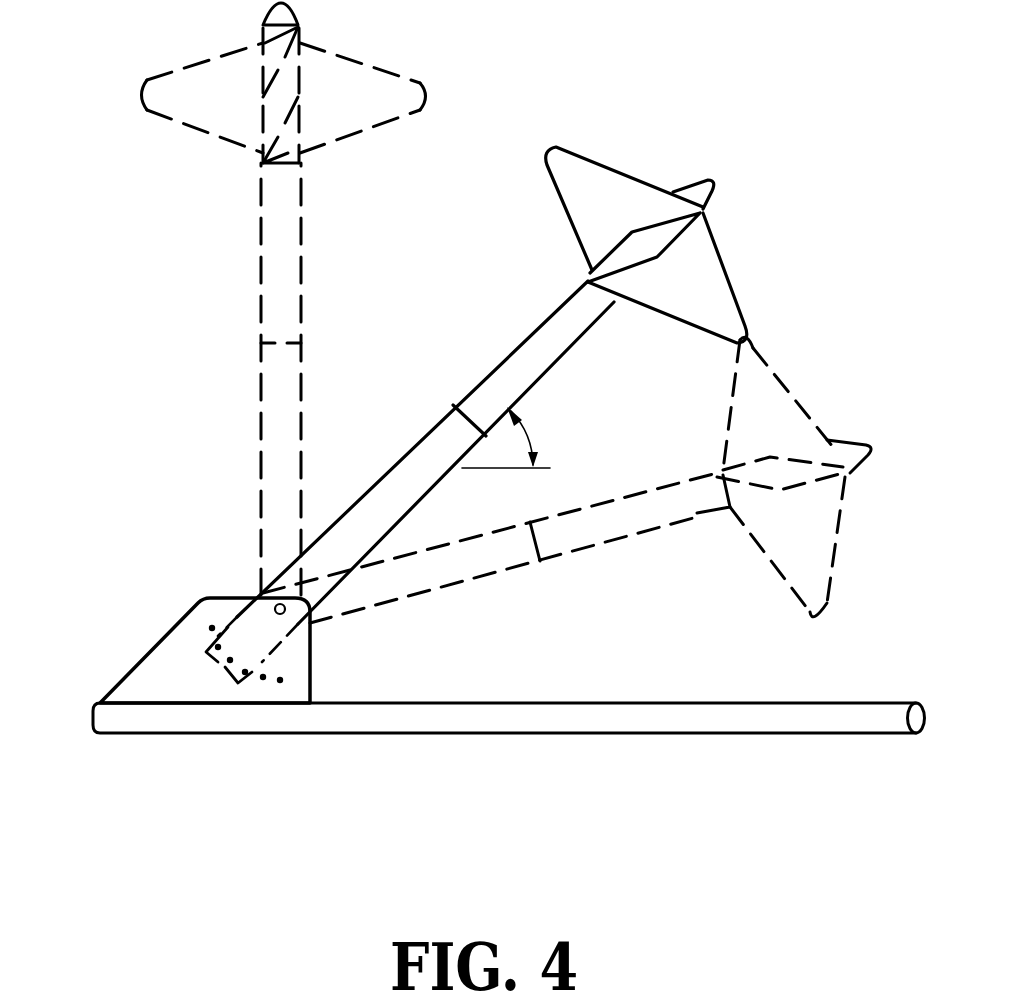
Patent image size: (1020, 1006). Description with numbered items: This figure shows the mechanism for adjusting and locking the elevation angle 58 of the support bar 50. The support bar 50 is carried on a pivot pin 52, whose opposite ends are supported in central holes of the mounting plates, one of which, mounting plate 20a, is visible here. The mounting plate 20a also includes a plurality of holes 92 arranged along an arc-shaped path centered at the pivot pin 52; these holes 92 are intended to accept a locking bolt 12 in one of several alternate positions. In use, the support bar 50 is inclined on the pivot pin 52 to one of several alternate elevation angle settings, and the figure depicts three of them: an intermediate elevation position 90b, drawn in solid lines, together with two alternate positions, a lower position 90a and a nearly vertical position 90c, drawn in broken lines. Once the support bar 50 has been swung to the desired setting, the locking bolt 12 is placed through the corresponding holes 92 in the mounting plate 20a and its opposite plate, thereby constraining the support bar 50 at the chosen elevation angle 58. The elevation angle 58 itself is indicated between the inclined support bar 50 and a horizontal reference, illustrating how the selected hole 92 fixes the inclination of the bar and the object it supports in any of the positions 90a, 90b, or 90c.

The locking bolt 12 is at (229, 663).
The mounting plate 20a is at (173, 627).
The support bar 50 is at (376, 480).
The pivot pin 52 is at (260, 593).
The elevation angle 58 is at (530, 437).
The alternate elevation position 90a is at (680, 523).
The intermediate elevation position 90b is at (583, 340).
The alternate elevation position 90c is at (302, 213).
The holes 92 is at (263, 680).